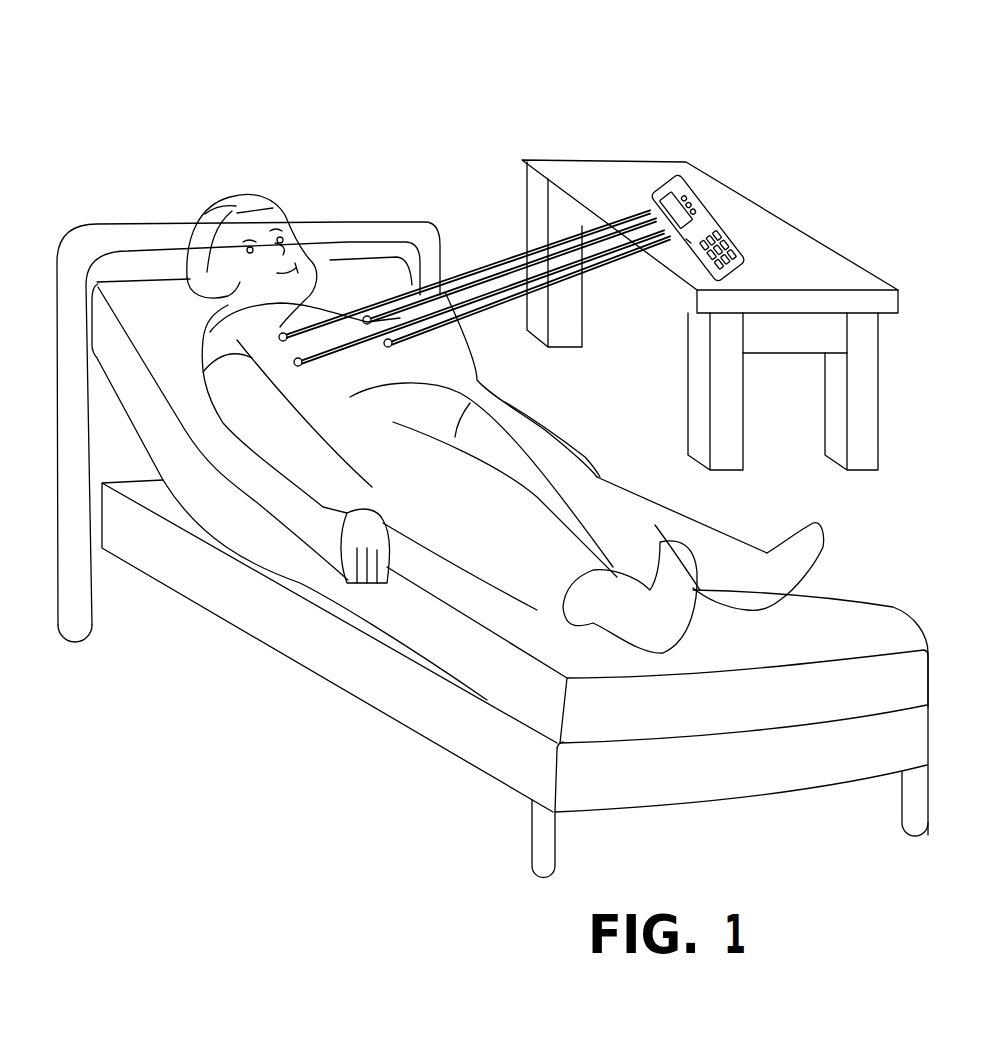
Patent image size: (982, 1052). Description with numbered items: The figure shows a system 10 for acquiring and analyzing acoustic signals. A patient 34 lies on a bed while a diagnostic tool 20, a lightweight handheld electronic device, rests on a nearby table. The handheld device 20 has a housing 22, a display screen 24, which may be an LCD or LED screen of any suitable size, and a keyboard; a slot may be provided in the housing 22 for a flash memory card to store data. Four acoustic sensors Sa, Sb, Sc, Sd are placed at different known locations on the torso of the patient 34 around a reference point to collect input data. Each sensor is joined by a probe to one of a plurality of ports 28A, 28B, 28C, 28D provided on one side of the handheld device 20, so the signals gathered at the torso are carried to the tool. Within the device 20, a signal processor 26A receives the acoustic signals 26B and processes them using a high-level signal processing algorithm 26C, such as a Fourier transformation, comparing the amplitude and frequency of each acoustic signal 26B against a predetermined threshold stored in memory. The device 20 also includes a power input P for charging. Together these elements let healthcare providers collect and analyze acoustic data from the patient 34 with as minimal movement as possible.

The system 10 is at (890, 80).
The diagnostic tool 20 is at (694, 247).
The housing 22 is at (735, 252).
The display screen 24 is at (680, 180).
The signal processor 26A is at (689, 195).
The acoustic signals 26B is at (694, 207).
The signal processing algorithm 26C is at (700, 215).
The port 28A is at (650, 208).
The port 28B is at (654, 216).
The port 28C is at (660, 228).
The port 28D is at (670, 238).
The patient 34 is at (187, 267).
The power input P is at (686, 240).
The acoustic sensor Sa is at (288, 333).
The acoustic sensor Sb is at (373, 317).
The acoustic sensor Sc is at (392, 345).
The acoustic sensor Sd is at (301, 368).